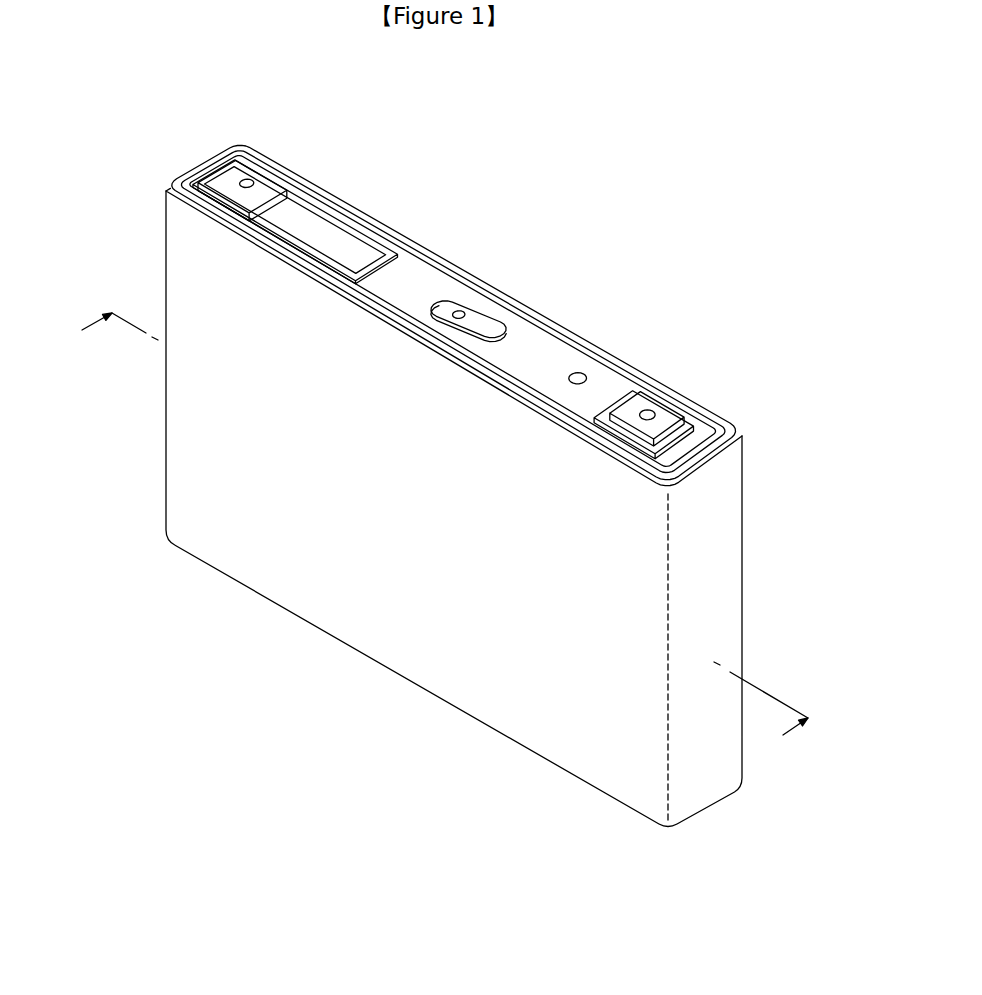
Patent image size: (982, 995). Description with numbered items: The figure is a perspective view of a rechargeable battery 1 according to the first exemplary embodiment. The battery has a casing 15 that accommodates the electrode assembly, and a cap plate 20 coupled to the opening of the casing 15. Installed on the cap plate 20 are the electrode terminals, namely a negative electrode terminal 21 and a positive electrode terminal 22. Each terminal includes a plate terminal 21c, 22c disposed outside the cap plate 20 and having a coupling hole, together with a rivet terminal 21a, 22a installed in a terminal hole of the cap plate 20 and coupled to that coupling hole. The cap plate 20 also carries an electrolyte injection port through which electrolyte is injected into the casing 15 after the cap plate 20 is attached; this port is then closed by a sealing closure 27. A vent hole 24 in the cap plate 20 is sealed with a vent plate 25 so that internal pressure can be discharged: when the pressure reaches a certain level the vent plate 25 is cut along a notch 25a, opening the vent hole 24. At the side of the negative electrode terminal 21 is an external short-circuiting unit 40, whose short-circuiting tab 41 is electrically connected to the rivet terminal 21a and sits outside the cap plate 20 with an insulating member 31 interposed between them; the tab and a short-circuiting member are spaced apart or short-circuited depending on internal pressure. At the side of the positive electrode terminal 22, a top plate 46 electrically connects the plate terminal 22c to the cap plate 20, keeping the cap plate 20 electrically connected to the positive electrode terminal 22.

The rechargeable battery 1 is at (572, 172).
The casing 15 is at (375, 627).
The cap plate 20 is at (425, 274).
The negative electrode terminal 21 is at (250, 154).
The rivet terminal 21a is at (240, 177).
The plate terminal 21c is at (272, 183).
The positive electrode terminal 22 is at (710, 406).
The rivet terminal 22a is at (657, 414).
The plate terminal 22c is at (662, 425).
The vent hole 24 is at (458, 316).
The vent plate 25 is at (470, 322).
The notch 25a is at (478, 336).
The sealing closure 27 is at (576, 377).
The insulating member 31 is at (318, 211).
The external short-circuiting unit 40 is at (361, 208).
The short-circuiting tab 41 is at (372, 253).
The top plate 46 is at (667, 446).